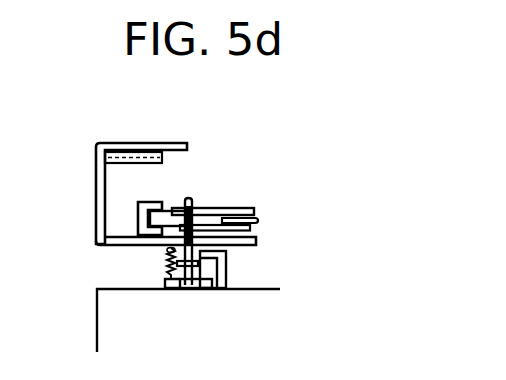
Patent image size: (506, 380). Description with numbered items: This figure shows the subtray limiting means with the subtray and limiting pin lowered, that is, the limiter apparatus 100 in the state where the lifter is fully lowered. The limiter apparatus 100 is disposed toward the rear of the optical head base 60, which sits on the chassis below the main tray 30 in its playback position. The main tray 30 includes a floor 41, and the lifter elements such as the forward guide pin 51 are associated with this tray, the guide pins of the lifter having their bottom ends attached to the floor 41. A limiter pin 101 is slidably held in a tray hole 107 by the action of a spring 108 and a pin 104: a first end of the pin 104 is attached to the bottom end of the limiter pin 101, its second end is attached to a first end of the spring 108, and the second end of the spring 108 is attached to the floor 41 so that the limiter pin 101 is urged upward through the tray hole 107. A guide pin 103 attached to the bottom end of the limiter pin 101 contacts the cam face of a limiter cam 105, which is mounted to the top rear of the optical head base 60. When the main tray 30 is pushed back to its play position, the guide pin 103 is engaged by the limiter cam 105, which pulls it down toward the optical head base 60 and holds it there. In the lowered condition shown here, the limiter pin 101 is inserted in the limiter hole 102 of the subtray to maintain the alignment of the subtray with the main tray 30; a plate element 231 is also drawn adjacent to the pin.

The main tray 30 is at (115, 142).
The floor 41 is at (103, 245).
The forward guide pin 51 is at (252, 209).
The thin plate 231 is at (263, 226).
The tray hole 107 is at (212, 209).
The limiter pin 101 is at (188, 205).
The limiter hole 102 is at (194, 207).
The spring 108 is at (167, 268).
The pin 104 is at (175, 290).
The guide pin 103 is at (202, 291).
The limiter cam 105 is at (232, 290).
The limiter apparatus 100 is at (192, 242).
The optical head base 60 is at (97, 328).